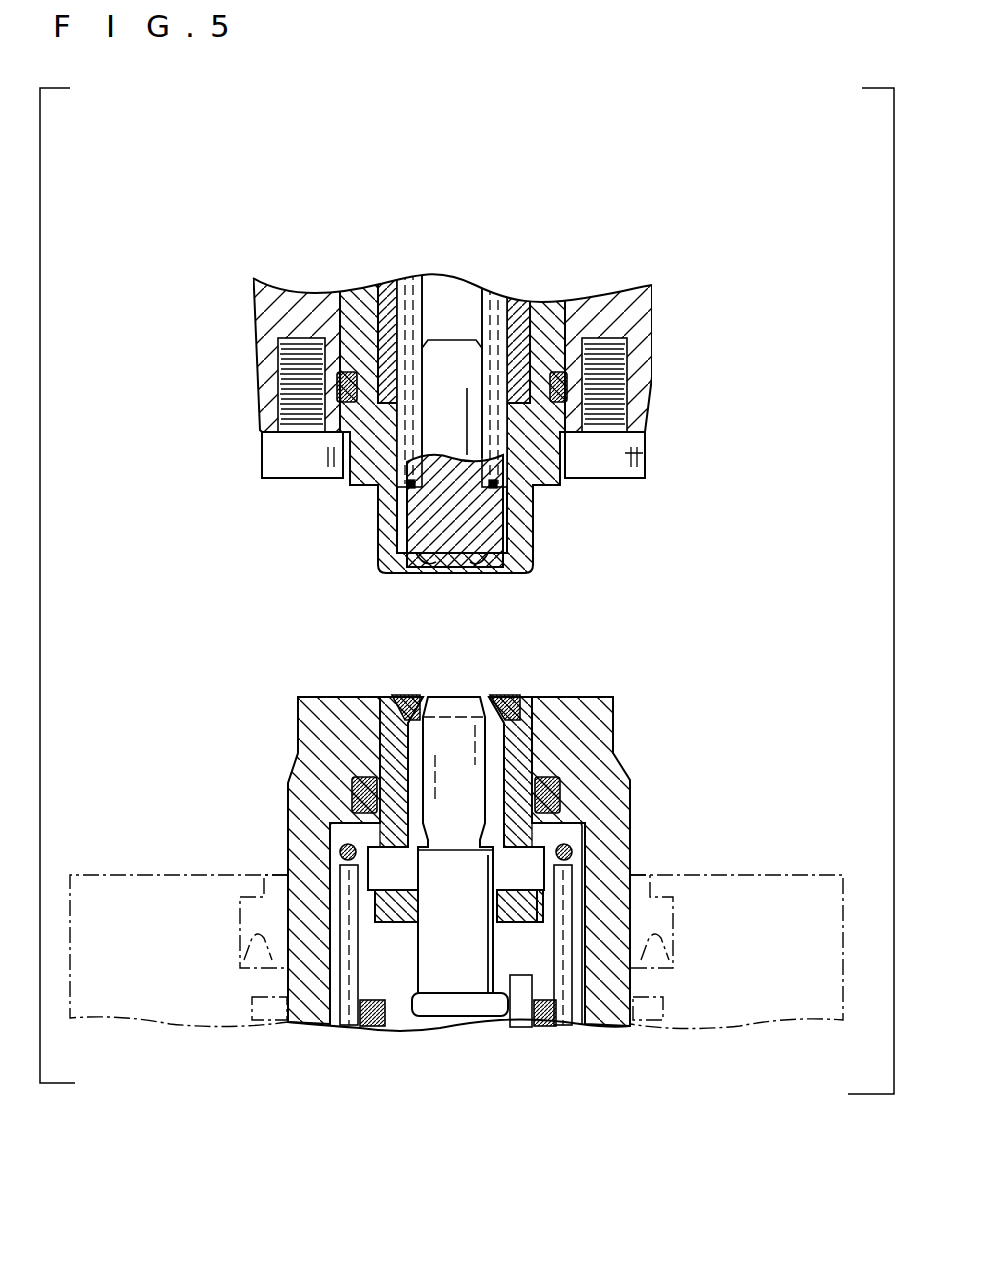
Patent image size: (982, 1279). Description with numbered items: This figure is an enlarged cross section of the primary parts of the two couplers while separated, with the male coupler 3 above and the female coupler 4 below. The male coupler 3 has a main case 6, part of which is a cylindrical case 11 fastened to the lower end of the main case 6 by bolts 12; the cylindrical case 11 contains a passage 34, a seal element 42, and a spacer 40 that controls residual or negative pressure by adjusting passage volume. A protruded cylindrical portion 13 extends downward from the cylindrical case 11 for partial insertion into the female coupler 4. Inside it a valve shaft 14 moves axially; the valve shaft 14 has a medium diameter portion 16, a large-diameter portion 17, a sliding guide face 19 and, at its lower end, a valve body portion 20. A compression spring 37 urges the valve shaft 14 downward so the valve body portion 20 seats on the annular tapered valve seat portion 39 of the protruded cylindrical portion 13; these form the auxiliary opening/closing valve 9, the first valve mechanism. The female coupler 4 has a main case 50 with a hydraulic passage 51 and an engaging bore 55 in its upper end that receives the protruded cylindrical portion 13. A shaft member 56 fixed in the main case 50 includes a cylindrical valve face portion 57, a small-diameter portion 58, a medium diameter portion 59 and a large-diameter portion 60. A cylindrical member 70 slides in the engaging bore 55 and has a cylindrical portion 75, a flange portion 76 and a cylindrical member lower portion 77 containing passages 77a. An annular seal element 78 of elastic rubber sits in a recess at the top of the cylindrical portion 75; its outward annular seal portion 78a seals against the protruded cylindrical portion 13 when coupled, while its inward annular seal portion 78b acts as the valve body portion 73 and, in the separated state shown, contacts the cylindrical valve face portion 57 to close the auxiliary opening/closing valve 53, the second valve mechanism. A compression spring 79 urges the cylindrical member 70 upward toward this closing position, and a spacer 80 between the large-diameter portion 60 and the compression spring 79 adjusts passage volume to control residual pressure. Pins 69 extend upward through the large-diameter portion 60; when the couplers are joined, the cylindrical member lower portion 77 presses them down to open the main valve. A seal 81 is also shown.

The male coupler 3 is at (485, 400).
The main case 6 is at (241, 283).
The medium diameter portion 16 is at (447, 297).
The passage 34 is at (483, 307).
The spacer 40 is at (517, 312).
The large-diameter portion 17 is at (470, 375).
The seal element 42 is at (255, 377).
The cylindrical case 11 is at (360, 455).
The bolts 12 is at (620, 453).
The protruded cylindrical portion 13 is at (377, 510).
The compression spring 37 is at (538, 497).
The valve shaft 14 is at (437, 533).
The sliding guide face 19 is at (517, 525).
The valve seat portion 39 is at (440, 577).
The valve body portion 20 is at (500, 577).
The auxiliary opening/closing valve 9 is at (417, 585).
The valve body portion 73 is at (447, 617).
The auxiliary opening/closing valve 53 is at (523, 644).
The female coupler 4 is at (456, 823).
The main case 50 is at (633, 842).
The engaging bore 55 is at (333, 755).
The seal 81 is at (565, 792).
The cylindrical valve face portion 57 is at (427, 697).
The annular seal element 78 is at (506, 658).
The annular seal portion 78a is at (520, 692).
The annular seal portion 78b is at (485, 697).
The cylindrical member 70 is at (613, 697).
The cylindrical portion 75 is at (347, 697).
The small-diameter portion 58 is at (467, 777).
The shaft member 56 is at (436, 972).
The flange portion 76 is at (330, 812).
The medium diameter portion 59 is at (328, 868).
The cylindrical member lower portion 77 is at (393, 923).
The passages 77a is at (533, 877).
The compression spring 79 is at (590, 979).
The large-diameter portion 60 is at (443, 1010).
The pins 69 is at (508, 1010).
The spacer 80 is at (557, 1020).
The hydraulic passage 51 is at (373, 983).